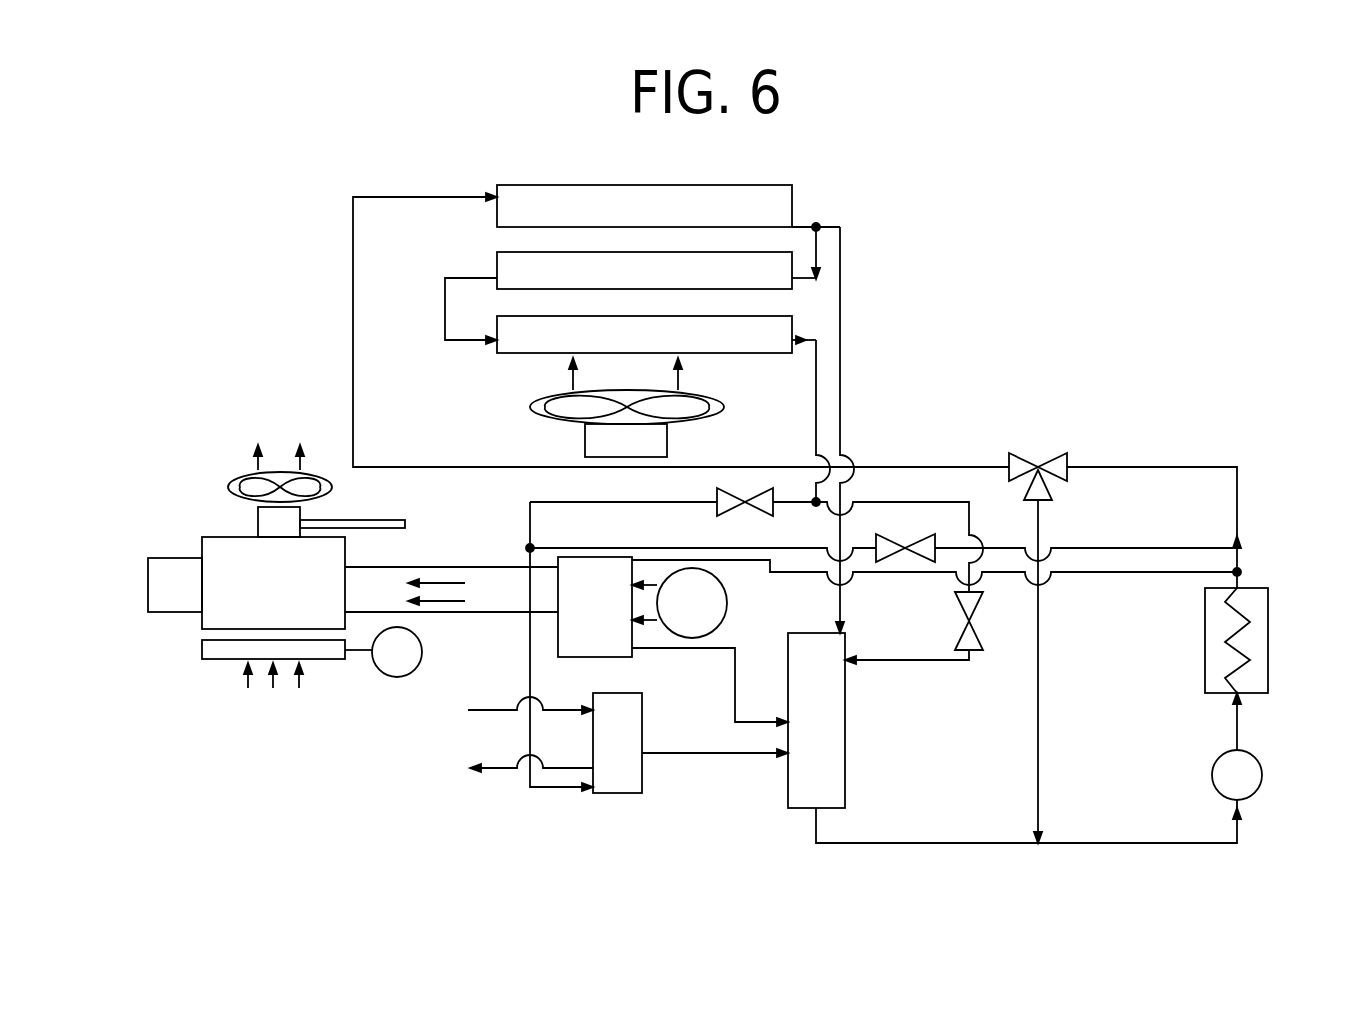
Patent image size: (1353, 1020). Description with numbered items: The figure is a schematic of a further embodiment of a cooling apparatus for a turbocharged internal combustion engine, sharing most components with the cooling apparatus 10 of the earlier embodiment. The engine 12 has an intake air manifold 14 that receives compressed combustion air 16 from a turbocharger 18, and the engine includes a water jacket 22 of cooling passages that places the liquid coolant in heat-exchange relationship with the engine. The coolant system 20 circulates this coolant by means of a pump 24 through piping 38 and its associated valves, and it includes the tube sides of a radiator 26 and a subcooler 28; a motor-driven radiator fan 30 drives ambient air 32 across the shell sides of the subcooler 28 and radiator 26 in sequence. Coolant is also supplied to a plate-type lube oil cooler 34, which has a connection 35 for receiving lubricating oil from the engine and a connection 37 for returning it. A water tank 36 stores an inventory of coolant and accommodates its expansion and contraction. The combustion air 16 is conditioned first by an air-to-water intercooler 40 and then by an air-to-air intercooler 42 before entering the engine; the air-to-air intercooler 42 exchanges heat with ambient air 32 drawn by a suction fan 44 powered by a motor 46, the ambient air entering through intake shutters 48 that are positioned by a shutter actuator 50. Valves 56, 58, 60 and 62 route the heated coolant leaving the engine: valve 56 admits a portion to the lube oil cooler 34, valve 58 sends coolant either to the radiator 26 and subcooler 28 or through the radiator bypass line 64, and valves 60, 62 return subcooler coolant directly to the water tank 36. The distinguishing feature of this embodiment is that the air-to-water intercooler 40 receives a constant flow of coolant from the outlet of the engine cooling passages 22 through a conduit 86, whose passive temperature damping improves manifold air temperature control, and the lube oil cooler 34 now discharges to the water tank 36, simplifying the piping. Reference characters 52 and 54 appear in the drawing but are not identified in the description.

The cooling apparatus 10 is at (212, 817).
The internal combustion engine 12 is at (1268, 600).
The intake air manifold 14 is at (161, 600).
The combustion air 16 is at (450, 578).
The turbocharger 18 is at (676, 620).
The coolant system 20 is at (1117, 677).
The water jacket 22 is at (1250, 660).
The pump 24 is at (1221, 792).
The radiator 26 is at (631, 223).
The subcooler 28 is at (631, 287).
The radiator fan 30 is at (527, 408).
The ambient air 32 is at (678, 358).
The lube oil cooler 34 is at (601, 759).
The connection 35 is at (498, 712).
The water tank 36 is at (801, 740).
The connection 37 is at (503, 770).
The piping 38 is at (353, 420).
The air-to-water intercooler 40 is at (579, 617).
The air-to-air intercooler 42 is at (254, 597).
The suction fan 44 is at (228, 492).
The motor 46 is at (253, 527).
The intake shutters 48 is at (202, 645).
The shutter actuator 50 is at (381, 669).
The return conduit 52 is at (842, 402).
The enclosure 54 is at (429, 525).
The valve 56 is at (904, 548).
The valve 58 is at (1038, 462).
The valve 60 is at (740, 506).
The valve 62 is at (975, 614).
The radiator bypass line 64 is at (1040, 770).
The conduit 86 is at (1095, 575).